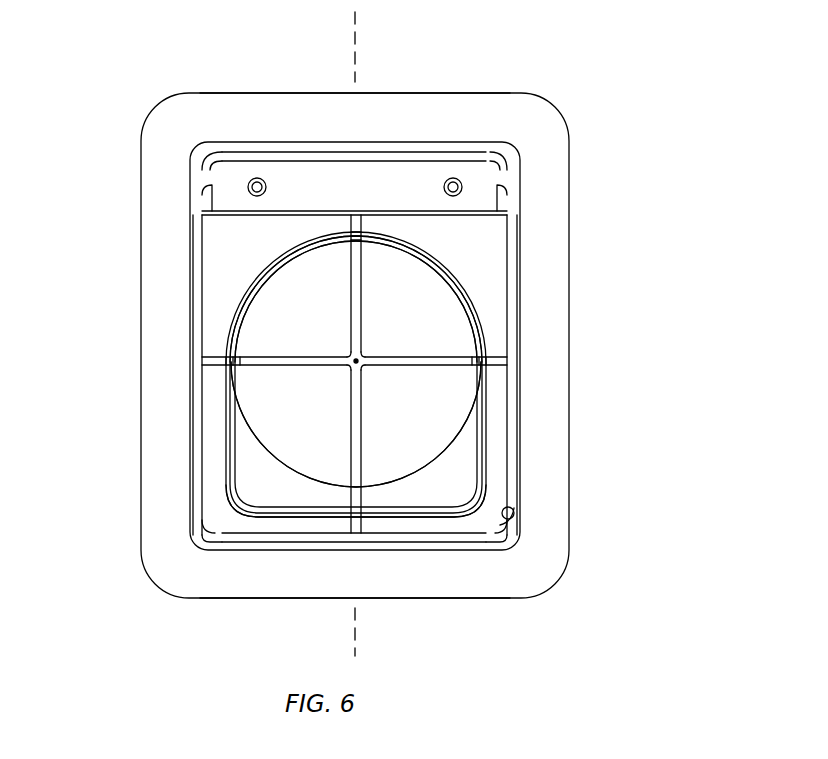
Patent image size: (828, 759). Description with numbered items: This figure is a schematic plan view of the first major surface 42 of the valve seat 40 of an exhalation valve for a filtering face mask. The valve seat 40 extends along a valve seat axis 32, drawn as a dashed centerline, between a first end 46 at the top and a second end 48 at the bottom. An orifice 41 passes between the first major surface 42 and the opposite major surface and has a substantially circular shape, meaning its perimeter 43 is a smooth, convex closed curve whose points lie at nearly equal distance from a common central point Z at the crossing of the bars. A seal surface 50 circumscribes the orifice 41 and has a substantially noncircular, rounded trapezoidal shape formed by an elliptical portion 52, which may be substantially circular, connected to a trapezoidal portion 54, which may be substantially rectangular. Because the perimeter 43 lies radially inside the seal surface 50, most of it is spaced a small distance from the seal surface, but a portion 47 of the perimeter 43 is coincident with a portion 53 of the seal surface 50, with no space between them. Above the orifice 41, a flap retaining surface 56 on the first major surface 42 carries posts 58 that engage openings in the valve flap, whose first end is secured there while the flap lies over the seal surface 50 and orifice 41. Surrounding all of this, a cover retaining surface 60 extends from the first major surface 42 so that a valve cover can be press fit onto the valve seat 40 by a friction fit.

The valve seat axis 32 is at (355, 33).
The valve seat 40 is at (605, 112).
The orifice 41 is at (445, 390).
The first major surface 42 is at (157, 452).
The perimeter 43 is at (273, 457).
The first end 46 is at (386, 93).
The portion of perimeter 47 is at (356, 301).
The second end 48 is at (428, 600).
The seal surface 50 is at (230, 254).
The elliptical portion 52 is at (468, 292).
The portion of seal surface 53 is at (402, 288).
The trapezoidal portion 54 is at (488, 473).
The flap retaining surface 56 is at (286, 172).
The posts 58 is at (250, 181).
The cover retaining surface 60 is at (190, 320).
The center point Z is at (363, 367).